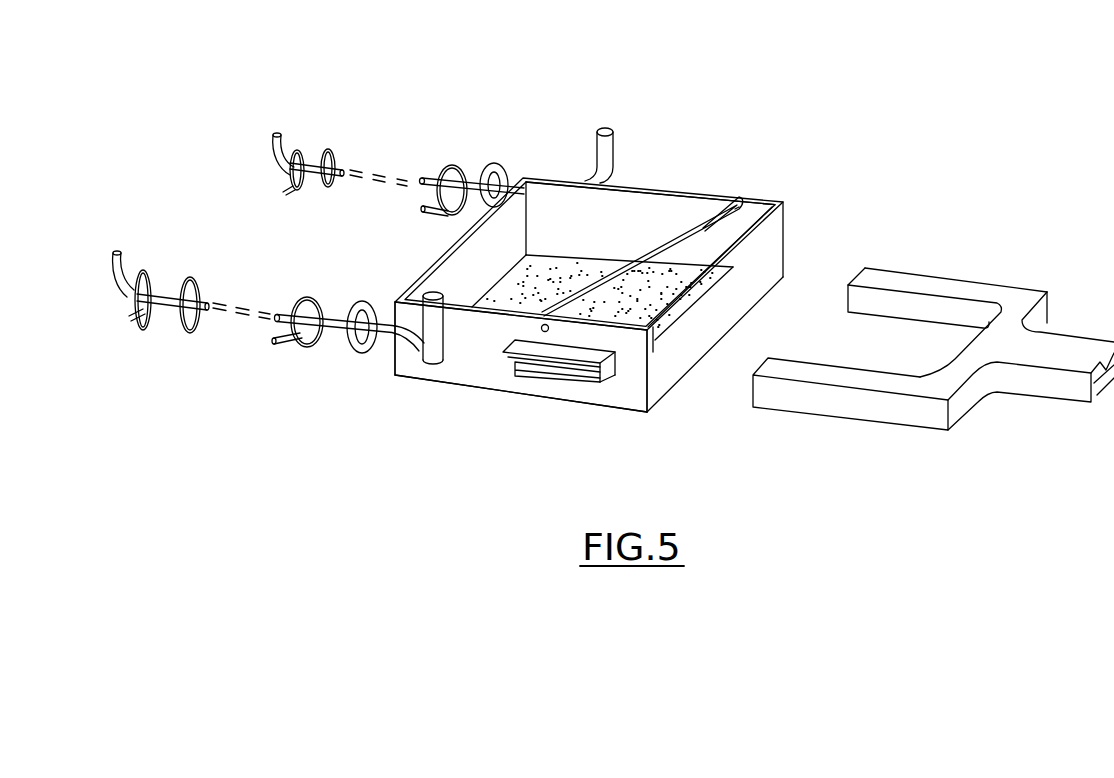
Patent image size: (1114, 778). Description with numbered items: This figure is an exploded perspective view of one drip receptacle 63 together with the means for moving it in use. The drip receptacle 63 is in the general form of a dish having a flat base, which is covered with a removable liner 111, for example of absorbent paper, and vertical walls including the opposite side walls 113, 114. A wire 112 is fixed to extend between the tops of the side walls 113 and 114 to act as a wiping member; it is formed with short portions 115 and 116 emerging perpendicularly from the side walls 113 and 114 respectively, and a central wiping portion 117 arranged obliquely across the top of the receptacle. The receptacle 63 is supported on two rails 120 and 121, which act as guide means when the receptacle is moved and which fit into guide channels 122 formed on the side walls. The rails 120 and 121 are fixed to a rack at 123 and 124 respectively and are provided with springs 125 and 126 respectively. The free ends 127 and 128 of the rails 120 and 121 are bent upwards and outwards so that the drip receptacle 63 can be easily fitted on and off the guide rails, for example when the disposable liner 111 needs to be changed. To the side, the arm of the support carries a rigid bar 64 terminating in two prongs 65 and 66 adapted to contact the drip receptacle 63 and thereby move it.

The drip receptacle 63 is at (668, 398).
The rigid bar 64 is at (1052, 387).
The prong 65 is at (857, 412).
The prong 66 is at (957, 287).
The removable liner 111 is at (538, 267).
The wire 112 is at (678, 254).
The side wall 113 is at (465, 372).
The side wall 114 is at (637, 200).
The short portion 115 is at (541, 332).
The short portion 116 is at (740, 201).
The central wiping portion 117 is at (688, 233).
The rail 120 is at (433, 340).
The rail 121 is at (432, 178).
The guide channel 122 is at (609, 385).
The fixing point of rail 120 123 is at (133, 257).
The fixing point of rail 121 124 is at (280, 137).
The spring 125 is at (320, 352).
The spring 126 is at (453, 170).
The free end of rail 120 127 is at (422, 350).
The free end of rail 121 128 is at (605, 130).